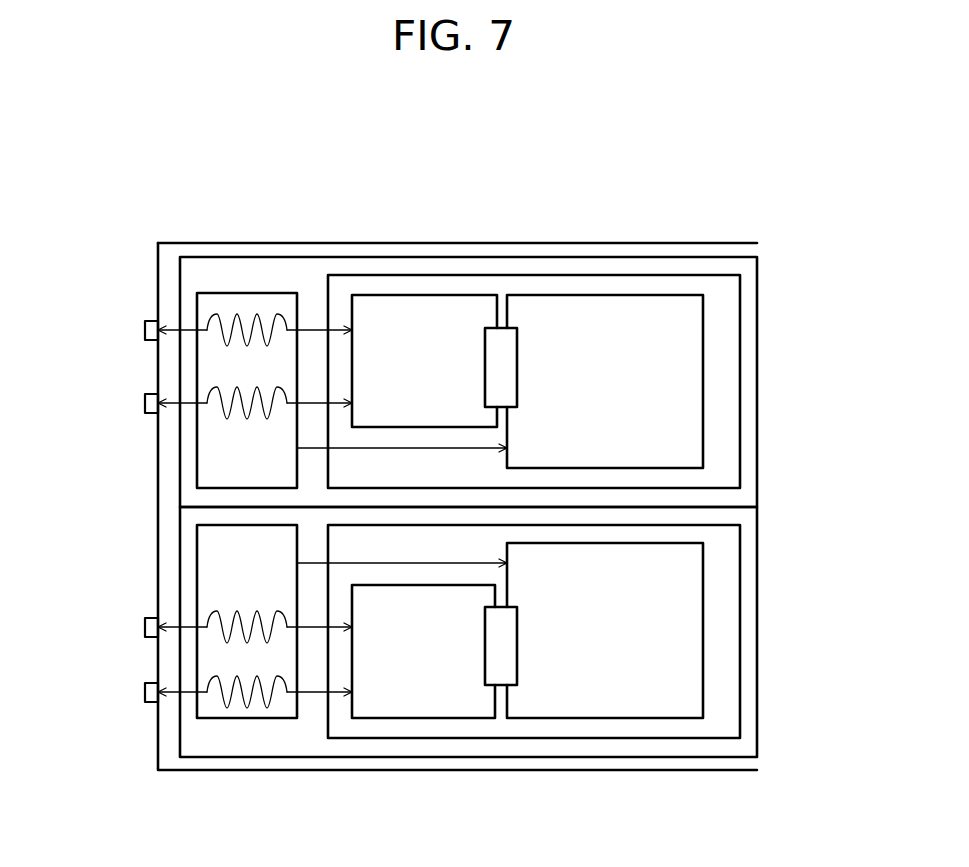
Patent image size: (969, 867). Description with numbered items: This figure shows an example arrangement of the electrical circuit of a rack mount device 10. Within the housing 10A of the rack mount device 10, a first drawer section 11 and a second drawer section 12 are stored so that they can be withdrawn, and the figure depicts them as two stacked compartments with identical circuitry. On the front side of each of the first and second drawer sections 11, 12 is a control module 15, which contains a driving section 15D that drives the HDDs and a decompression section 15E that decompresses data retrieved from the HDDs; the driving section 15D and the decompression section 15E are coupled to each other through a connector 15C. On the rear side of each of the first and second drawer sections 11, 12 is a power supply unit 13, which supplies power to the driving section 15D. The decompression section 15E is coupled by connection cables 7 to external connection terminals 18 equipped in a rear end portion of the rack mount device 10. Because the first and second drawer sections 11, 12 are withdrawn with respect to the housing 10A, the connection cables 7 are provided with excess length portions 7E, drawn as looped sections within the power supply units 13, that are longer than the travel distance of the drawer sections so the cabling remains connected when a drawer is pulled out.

The rack mount device 10 is at (181, 222).
The housing 10A is at (727, 243).
The first drawer section 11 is at (757, 727).
The second drawer section 12 is at (757, 477).
The power supply unit 13 is at (250, 293).
The control module 15 is at (610, 275).
The decompression section 15E is at (408, 295).
The connector 15C is at (517, 363).
The driving section 15D is at (703, 372).
The external connection terminal 18 is at (145, 330).
The connection cable 7 is at (310, 328).
The excess length portion 7E is at (236, 419).